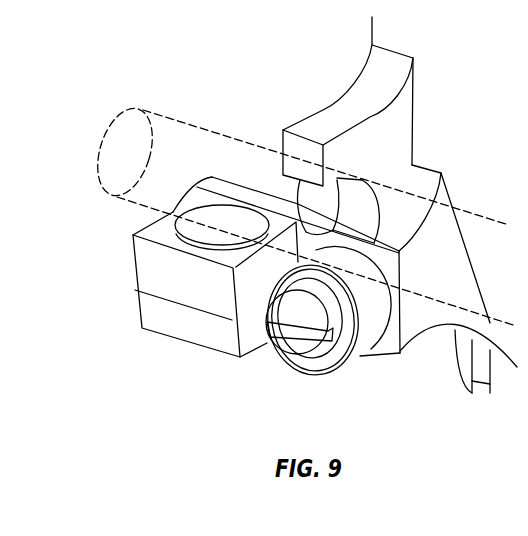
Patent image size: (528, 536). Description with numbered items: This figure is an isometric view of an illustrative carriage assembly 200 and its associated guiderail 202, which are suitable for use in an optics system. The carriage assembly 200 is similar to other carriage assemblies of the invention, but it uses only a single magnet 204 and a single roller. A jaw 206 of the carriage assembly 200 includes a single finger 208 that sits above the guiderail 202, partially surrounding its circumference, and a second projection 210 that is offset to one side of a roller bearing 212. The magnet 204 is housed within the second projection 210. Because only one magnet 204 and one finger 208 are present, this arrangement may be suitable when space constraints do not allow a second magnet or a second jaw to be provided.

The carriage assembly 200 is at (162, 382).
The guiderail 202 is at (117, 149).
The magnet 204 is at (233, 218).
The jaw 206 is at (328, 120).
The finger 208 is at (315, 153).
The second projection 210 is at (150, 268).
The roller bearing 212 is at (363, 347).